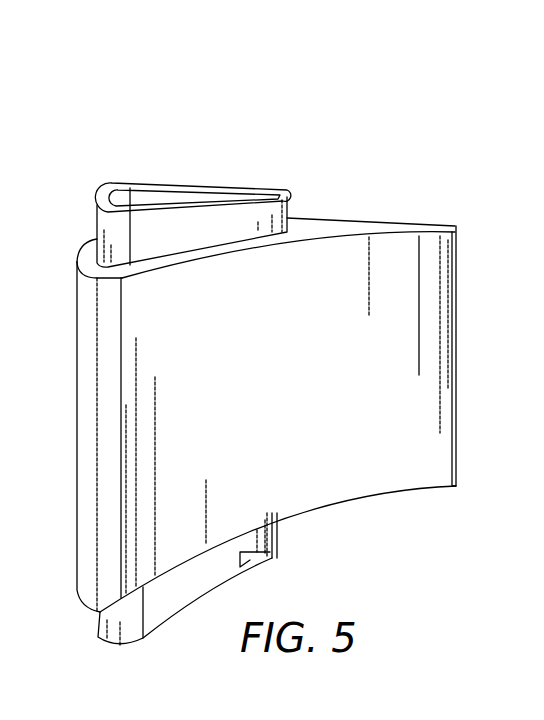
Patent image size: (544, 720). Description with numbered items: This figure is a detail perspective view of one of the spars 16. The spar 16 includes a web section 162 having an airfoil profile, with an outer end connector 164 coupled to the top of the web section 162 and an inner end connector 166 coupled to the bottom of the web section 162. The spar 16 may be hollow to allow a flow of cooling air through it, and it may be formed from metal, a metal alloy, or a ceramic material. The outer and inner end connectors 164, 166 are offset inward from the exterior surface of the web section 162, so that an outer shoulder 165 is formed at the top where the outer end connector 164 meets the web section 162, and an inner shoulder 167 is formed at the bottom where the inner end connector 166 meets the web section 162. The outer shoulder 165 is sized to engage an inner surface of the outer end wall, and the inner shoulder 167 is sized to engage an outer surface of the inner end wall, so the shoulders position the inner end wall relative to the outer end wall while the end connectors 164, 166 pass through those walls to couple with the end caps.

The spar 16 is at (333, 92).
The web section 162 is at (461, 326).
The outer end connector 164 is at (216, 184).
The outer shoulder 165 is at (311, 219).
The inner end connector 166 is at (275, 558).
The inner shoulder 167 is at (324, 504).